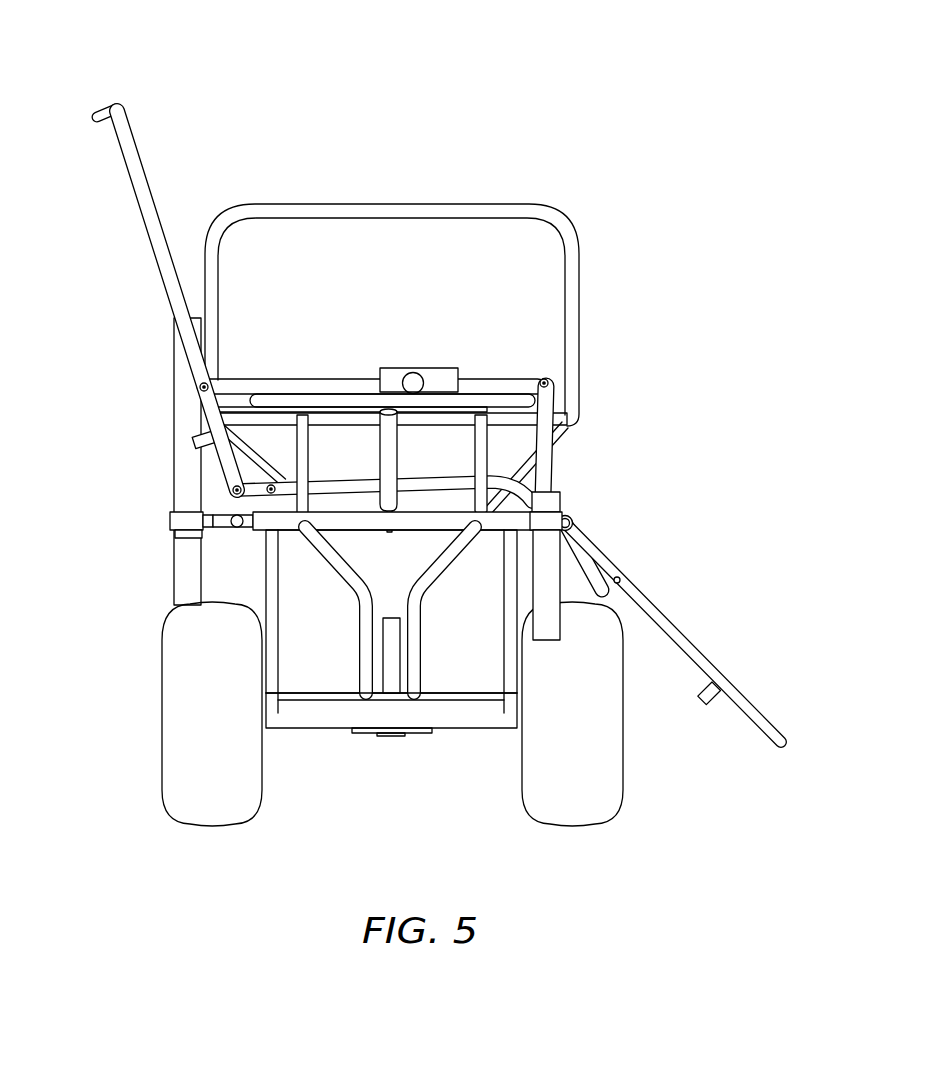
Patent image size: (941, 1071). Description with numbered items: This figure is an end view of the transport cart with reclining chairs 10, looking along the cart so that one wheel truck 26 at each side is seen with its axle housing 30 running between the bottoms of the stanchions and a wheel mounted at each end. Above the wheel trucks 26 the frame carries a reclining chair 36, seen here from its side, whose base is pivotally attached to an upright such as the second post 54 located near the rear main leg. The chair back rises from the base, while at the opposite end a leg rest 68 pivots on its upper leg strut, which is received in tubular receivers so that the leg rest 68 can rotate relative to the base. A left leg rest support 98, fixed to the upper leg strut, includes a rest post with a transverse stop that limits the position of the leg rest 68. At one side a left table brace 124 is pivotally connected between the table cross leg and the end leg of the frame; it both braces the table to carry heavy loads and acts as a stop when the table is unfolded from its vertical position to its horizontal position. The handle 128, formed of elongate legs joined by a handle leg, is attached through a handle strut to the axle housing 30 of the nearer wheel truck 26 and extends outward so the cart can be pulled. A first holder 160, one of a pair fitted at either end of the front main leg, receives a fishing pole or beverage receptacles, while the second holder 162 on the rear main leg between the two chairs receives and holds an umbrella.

The transport cart with reclining chairs 10 is at (486, 429).
The wheel truck 26 is at (173, 777).
The axle housing 30 is at (323, 710).
The reclining chair 36 is at (131, 204).
The second post 54 is at (268, 498).
The leg rest 68 is at (784, 722).
The left leg rest support 98 is at (606, 555).
The left table brace 124 is at (393, 448).
The handle 128 is at (556, 193).
The first holder 160 is at (545, 502).
The second holder 162 is at (185, 388).